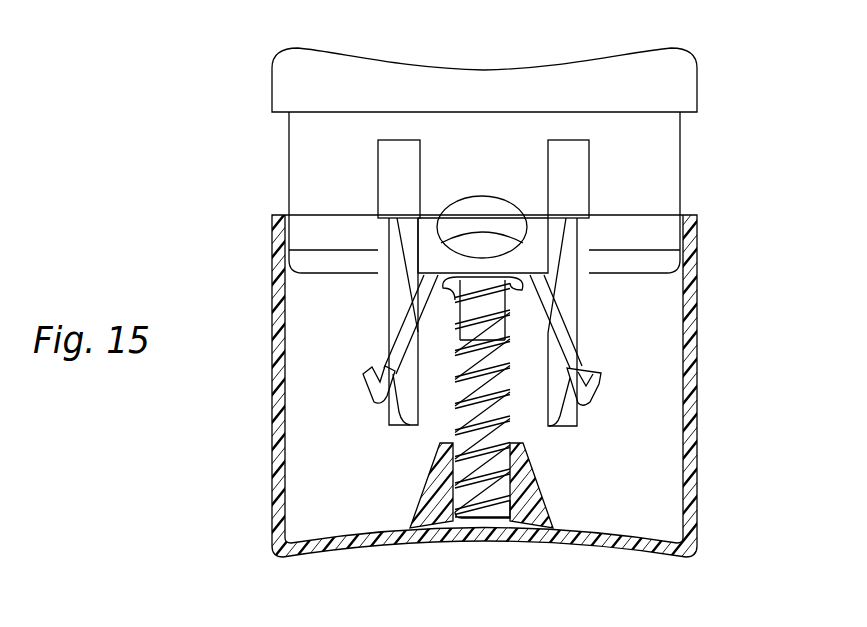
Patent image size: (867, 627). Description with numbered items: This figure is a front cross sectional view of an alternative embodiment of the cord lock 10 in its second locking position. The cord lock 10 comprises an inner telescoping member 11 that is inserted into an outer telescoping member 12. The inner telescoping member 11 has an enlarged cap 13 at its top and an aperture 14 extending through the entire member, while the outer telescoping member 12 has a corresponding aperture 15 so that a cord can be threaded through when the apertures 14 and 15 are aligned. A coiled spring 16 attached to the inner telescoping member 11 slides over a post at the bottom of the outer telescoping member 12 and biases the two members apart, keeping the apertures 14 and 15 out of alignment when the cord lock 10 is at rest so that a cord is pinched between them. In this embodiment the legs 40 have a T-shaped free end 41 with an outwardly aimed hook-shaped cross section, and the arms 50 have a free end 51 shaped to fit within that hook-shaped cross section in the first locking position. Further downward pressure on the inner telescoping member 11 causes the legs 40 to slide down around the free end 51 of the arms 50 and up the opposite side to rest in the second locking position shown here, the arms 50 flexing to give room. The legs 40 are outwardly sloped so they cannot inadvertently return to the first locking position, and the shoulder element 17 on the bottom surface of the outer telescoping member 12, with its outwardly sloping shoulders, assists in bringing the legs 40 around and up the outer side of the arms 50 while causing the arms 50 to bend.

The cord lock 10 is at (247, 367).
The inner telescoping member 11 is at (673, 145).
The outer telescoping member 12 is at (697, 488).
The enlarged cap 13 is at (469, 78).
The aperture 14 is at (526, 206).
The aperture 15 is at (525, 291).
The coiled spring 16 is at (455, 432).
The shoulder element 17 is at (528, 500).
The legs 40 is at (558, 319).
The T-shaped free end 41 is at (602, 379).
The arms 50 is at (557, 403).
The free end 51 is at (558, 432).